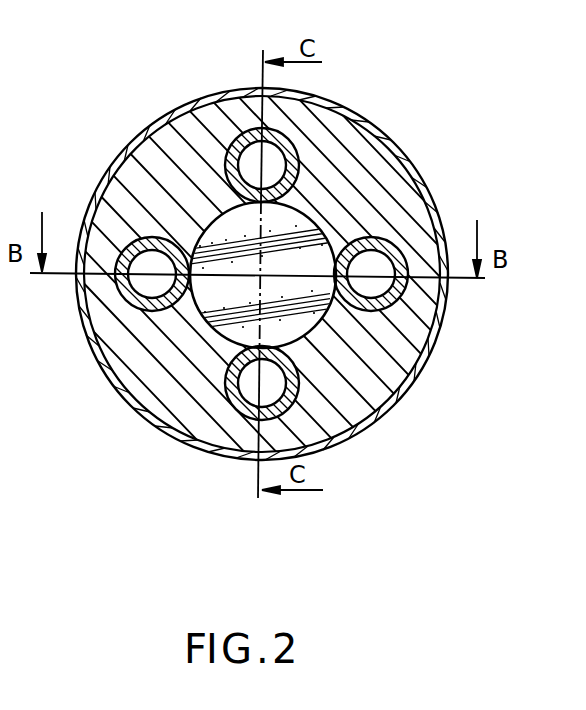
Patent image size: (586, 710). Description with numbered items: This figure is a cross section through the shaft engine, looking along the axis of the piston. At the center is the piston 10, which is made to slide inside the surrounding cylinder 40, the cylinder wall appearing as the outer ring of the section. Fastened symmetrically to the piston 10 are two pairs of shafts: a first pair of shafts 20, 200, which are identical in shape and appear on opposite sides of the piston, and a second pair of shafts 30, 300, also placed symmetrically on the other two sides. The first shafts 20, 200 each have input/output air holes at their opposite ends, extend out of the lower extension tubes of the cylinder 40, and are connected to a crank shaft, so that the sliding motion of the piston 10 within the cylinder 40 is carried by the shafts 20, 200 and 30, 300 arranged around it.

The piston 10 is at (383, 178).
The first shaft 20 is at (392, 327).
The second shaft 30 is at (239, 136).
The cylinder 40 is at (440, 222).
The first shaft 200 is at (118, 257).
The second shaft 300 is at (228, 400).